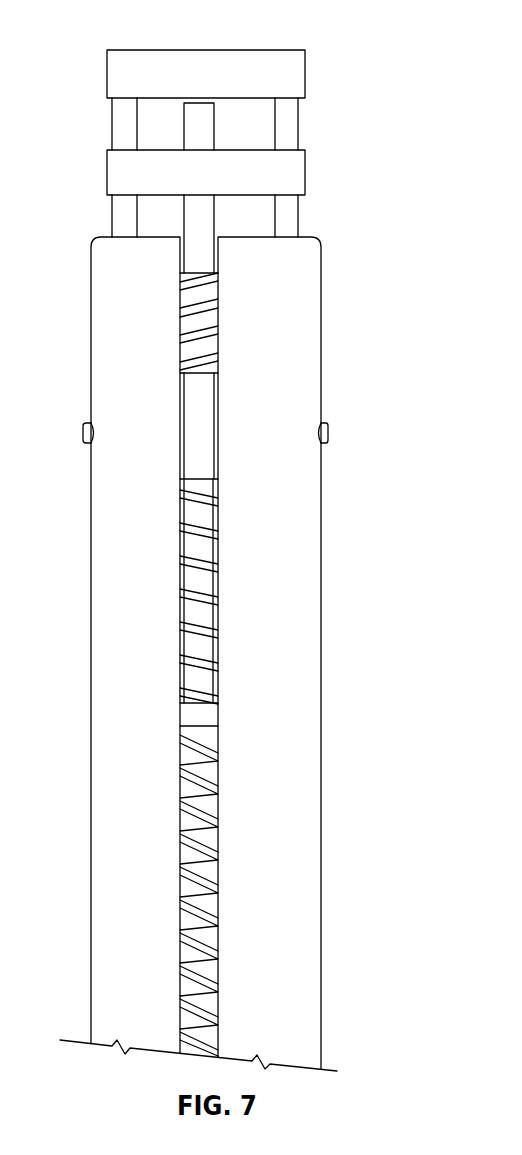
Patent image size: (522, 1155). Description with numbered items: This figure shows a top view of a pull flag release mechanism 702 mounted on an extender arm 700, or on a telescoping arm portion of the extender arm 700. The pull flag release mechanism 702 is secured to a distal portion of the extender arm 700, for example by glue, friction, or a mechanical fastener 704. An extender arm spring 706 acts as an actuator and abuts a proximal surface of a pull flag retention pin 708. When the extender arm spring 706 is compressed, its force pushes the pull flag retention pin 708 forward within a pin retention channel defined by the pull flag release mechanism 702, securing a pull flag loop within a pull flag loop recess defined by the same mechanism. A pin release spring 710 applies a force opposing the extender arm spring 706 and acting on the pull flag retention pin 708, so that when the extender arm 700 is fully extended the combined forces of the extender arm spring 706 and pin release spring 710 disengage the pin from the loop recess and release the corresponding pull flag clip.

The extender arm 700 is at (107, 340).
The pull flag release mechanism 702 is at (117, 71).
The mechanical fastener 704 is at (328, 432).
The extender arm spring 706 is at (200, 797).
The pull flag retention pin 708 is at (195, 117).
The pin release spring 710 is at (203, 602).